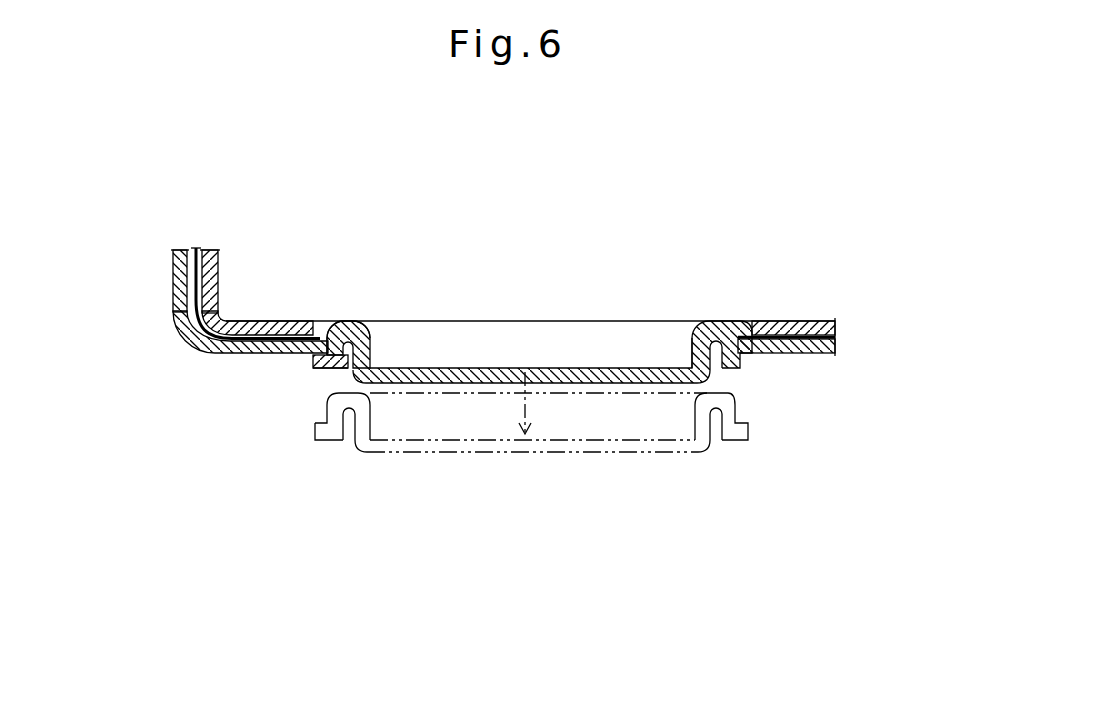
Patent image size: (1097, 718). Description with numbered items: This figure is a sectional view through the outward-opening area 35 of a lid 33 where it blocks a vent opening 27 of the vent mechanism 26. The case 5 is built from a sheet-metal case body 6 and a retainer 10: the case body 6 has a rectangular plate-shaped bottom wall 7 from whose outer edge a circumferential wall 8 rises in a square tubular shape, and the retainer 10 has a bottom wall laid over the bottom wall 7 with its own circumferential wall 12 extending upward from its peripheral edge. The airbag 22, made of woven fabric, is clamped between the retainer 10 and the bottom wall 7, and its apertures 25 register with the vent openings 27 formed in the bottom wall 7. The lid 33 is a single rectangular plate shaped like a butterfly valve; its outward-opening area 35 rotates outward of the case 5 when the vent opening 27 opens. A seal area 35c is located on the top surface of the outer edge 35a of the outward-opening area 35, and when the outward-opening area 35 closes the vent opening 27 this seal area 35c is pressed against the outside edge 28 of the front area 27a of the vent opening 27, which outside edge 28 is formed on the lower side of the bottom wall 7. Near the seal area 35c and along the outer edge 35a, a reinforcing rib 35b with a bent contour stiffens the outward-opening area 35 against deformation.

The case 5 is at (248, 113).
The case body 6 is at (182, 250).
The circumferential wall 8 is at (176, 302).
The retainer 10 is at (210, 250).
The circumferential wall 12 is at (212, 280).
The airbag 22 is at (180, 323).
The vent mechanism 26 is at (280, 432).
The bottom wall 7 is at (243, 355).
The apertures 25 is at (323, 358).
The outside edge 28 is at (320, 370).
The vent opening 27 is at (327, 270).
The front area 27a is at (339, 322).
The lid 33 is at (670, 290).
The outward-opening area 35 is at (572, 368).
The outer edge 35a is at (360, 297).
The reinforcing rib 35b is at (714, 324).
The seal area 35c is at (742, 326).